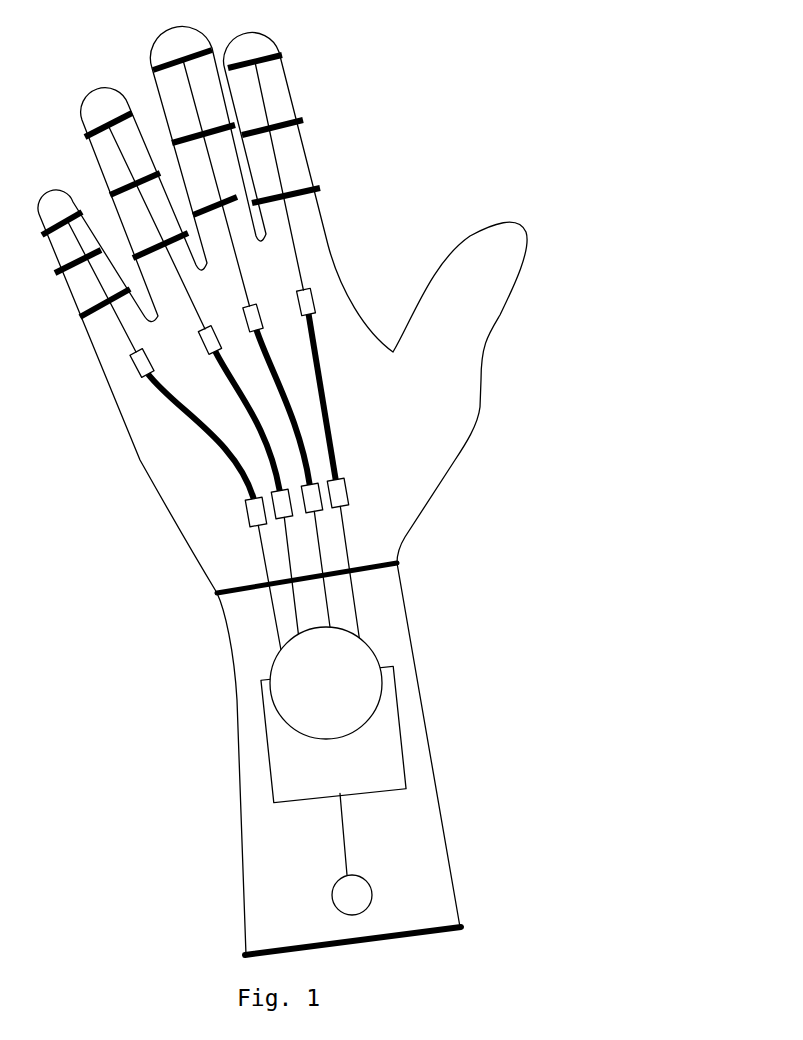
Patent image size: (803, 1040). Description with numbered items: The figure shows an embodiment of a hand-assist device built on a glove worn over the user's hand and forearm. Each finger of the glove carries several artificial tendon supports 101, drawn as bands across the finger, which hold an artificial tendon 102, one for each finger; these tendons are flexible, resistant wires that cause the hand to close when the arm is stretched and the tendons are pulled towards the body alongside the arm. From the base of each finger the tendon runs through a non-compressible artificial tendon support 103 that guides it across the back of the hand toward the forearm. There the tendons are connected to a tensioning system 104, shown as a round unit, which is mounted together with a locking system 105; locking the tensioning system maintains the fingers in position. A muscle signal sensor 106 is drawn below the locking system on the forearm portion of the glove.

The artificial tendon support 101 is at (281, 57).
The artificial tendon 102 is at (280, 167).
The non-compressible artificial tendon support 103 is at (322, 367).
The tensioning system 104 is at (380, 658).
The locking system 105 is at (402, 752).
The muscle signal sensor 106 is at (370, 877).